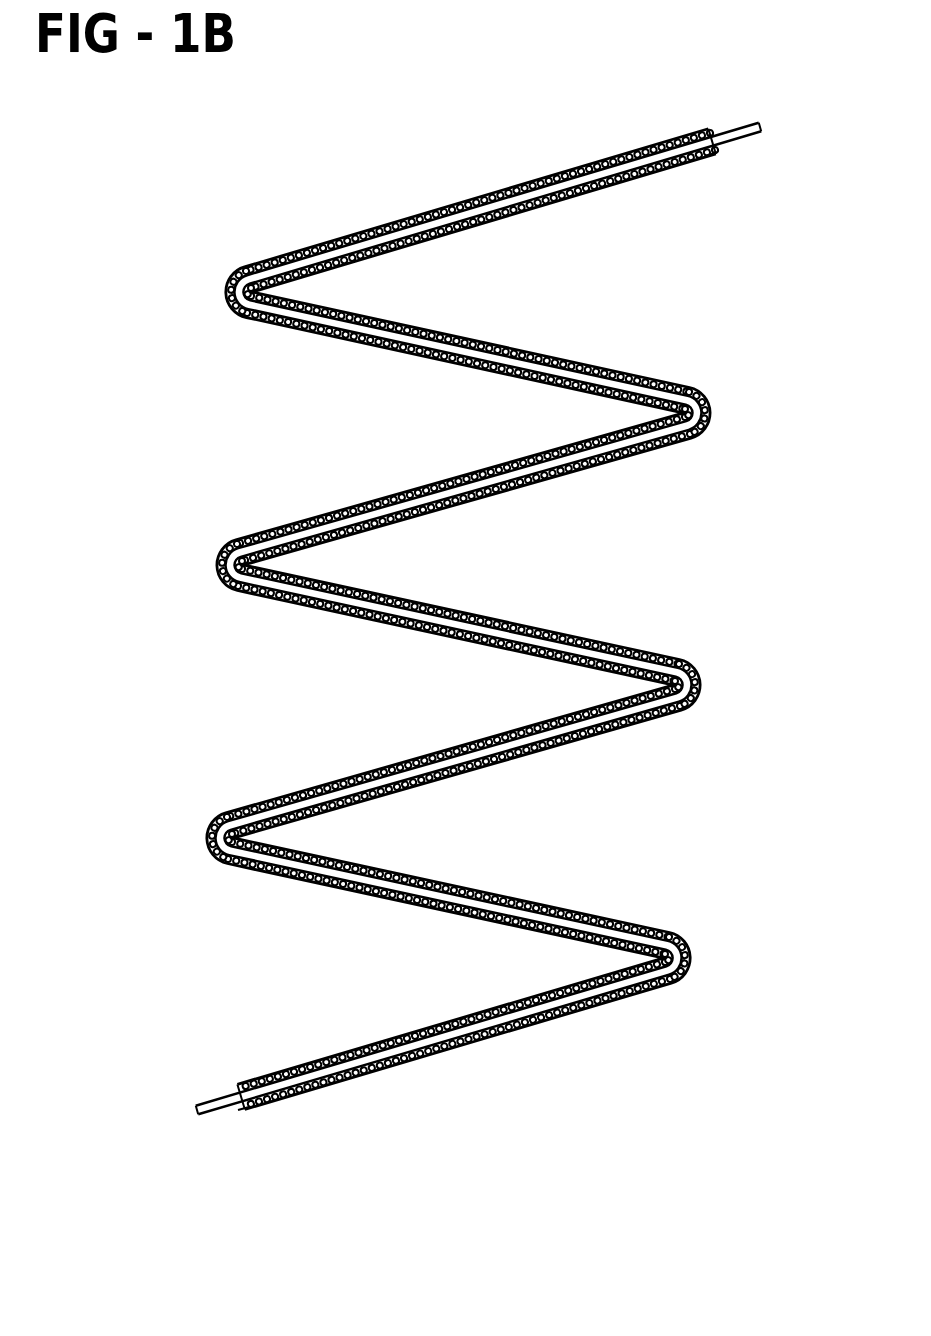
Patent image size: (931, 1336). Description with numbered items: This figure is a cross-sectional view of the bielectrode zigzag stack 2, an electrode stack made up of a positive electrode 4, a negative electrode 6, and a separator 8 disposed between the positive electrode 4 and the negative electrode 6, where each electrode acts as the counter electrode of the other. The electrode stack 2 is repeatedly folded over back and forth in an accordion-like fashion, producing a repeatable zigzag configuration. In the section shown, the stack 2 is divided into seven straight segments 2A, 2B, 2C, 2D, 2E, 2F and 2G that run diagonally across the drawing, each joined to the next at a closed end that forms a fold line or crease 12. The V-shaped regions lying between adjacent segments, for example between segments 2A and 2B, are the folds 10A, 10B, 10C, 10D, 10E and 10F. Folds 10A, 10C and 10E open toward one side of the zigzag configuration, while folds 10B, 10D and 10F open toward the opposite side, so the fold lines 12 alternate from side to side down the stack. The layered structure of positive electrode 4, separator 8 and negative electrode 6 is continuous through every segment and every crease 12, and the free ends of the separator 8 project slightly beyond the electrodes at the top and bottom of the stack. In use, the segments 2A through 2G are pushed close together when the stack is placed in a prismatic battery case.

The bielectrode zigzag stack 2 is at (465, 620).
The segment 2A is at (436, 208).
The segment 2B is at (521, 348).
The segment 2C is at (400, 491).
The segment 2D is at (506, 619).
The segment 2E is at (395, 762).
The segment 2F is at (496, 892).
The segment 2G is at (402, 1033).
The positive electrode 4 is at (709, 129).
The negative electrode 6 is at (717, 153).
The separator 8 is at (763, 128).
The fold 10A is at (660, 299).
The fold 10B is at (283, 406).
The fold 10C is at (660, 561).
The fold 10D is at (280, 686).
The fold 10E is at (639, 834).
The fold 10F is at (268, 949).
The fold line 12 is at (227, 292).